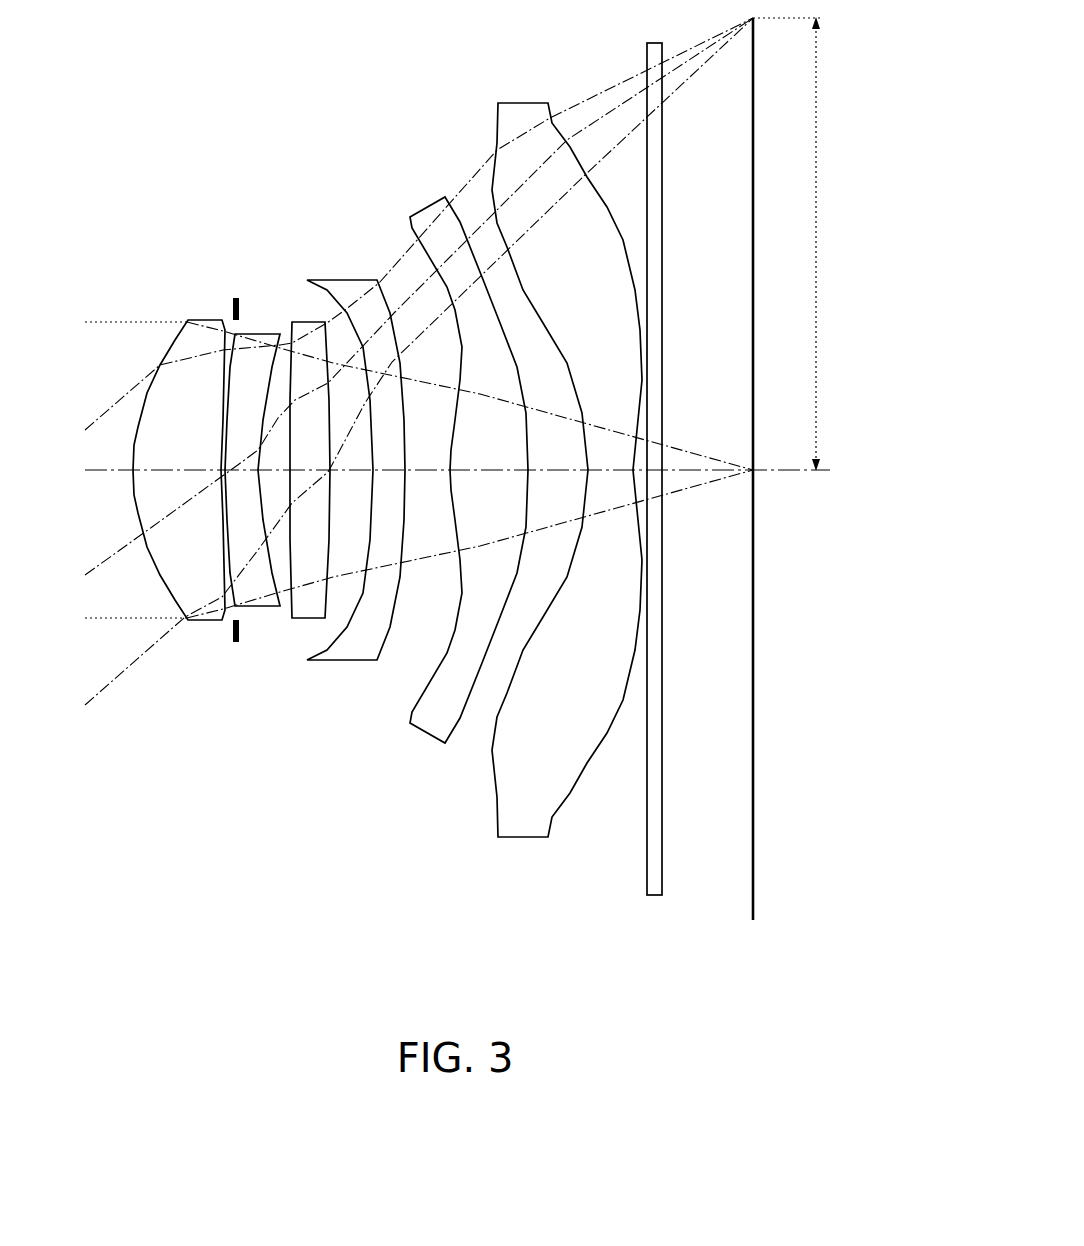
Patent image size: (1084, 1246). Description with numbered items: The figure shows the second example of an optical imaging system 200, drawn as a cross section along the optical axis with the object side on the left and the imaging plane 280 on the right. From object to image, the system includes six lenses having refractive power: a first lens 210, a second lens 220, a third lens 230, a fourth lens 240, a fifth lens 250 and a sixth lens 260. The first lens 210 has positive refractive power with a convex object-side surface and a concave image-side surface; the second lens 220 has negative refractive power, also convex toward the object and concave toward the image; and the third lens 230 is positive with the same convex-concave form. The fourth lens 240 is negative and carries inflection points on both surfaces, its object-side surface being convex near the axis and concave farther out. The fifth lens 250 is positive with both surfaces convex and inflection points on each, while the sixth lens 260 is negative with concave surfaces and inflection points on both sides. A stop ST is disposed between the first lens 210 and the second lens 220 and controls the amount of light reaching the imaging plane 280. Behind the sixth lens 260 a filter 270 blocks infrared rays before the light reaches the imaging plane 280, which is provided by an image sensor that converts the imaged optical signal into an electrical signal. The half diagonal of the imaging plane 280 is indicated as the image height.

The optical imaging system 200 is at (348, 92).
The first lens 210 is at (207, 623).
The second lens 220 is at (267, 607).
The third lens 230 is at (307, 613).
The fourth lens 240 is at (355, 661).
The fifth lens 250 is at (424, 728).
The sixth lens 260 is at (528, 838).
The filter 270 is at (655, 896).
The imaging plane 280 is at (753, 868).
The stop ST is at (238, 303).